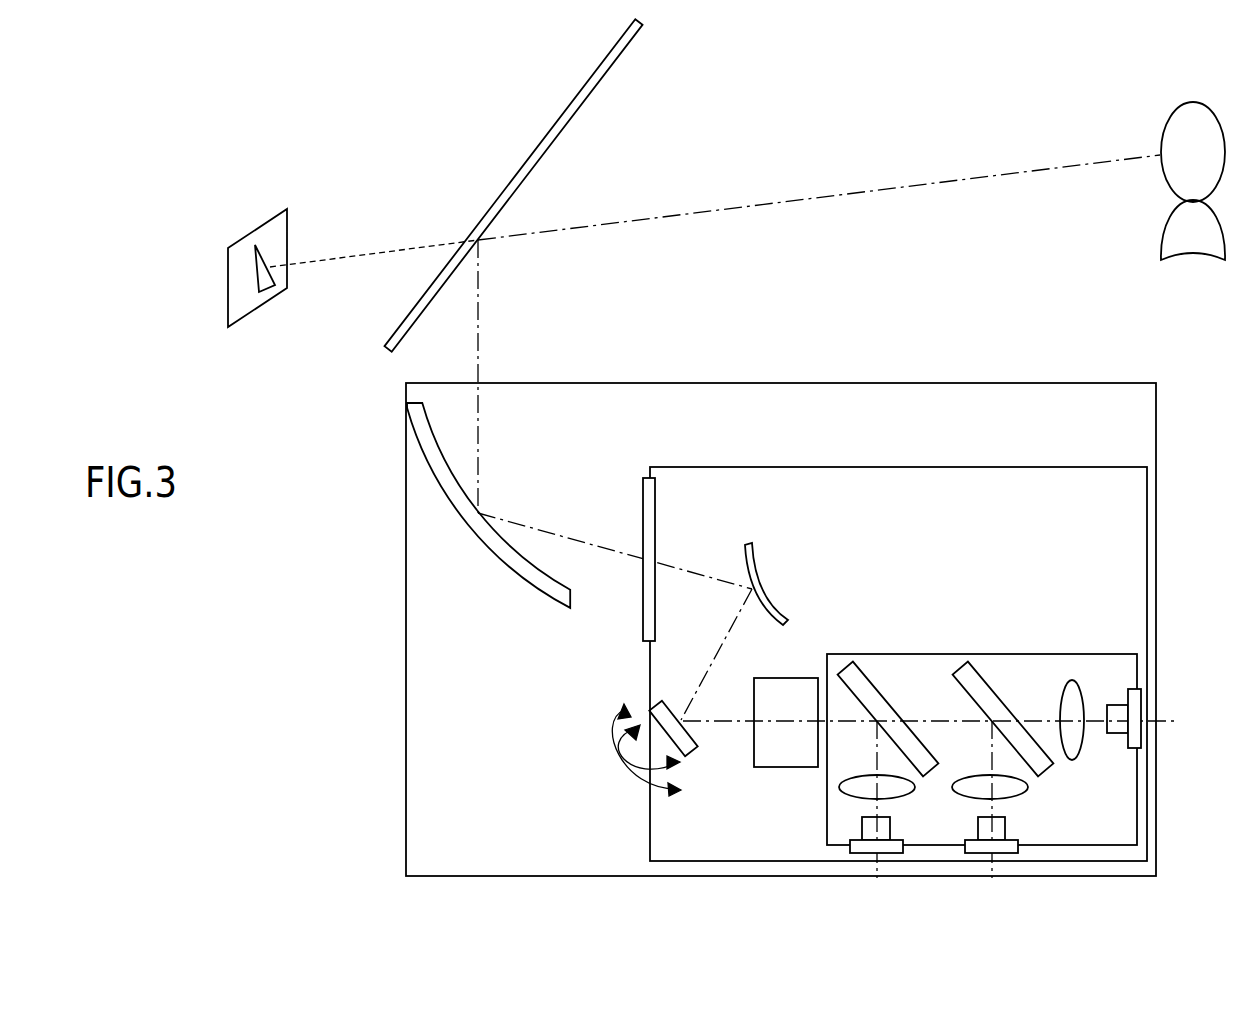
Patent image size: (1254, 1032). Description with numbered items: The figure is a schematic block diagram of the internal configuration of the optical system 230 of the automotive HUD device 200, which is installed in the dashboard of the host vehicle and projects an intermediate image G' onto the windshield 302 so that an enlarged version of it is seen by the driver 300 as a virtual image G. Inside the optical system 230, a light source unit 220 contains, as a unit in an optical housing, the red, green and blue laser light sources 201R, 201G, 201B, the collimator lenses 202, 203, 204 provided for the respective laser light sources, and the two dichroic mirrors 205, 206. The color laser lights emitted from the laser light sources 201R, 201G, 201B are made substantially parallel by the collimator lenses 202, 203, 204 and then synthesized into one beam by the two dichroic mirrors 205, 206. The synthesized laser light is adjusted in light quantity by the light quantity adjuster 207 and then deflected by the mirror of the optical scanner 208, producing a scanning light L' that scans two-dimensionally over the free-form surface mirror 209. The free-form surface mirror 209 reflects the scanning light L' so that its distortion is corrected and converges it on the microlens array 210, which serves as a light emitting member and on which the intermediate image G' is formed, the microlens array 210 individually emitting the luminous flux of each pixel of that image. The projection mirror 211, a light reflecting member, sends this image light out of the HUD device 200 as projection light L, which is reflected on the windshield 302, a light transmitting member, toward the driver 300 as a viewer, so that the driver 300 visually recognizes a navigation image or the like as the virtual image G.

The windshield 302 is at (556, 118).
The driver 300 is at (1193, 101).
The HUD device 200 is at (1181, 491).
The optical system 230 is at (405, 648).
The projection mirror 211 is at (417, 467).
The microlens array 210 is at (643, 494).
The free-form surface mirror 209 is at (758, 565).
The optical scanner 208 is at (690, 756).
The light quantity adjuster 207 is at (788, 678).
The dichroic mirror 206 is at (880, 680).
The dichroic mirror 205 is at (993, 680).
The collimator lens 204 is at (840, 787).
The collimator lens 203 is at (1026, 787).
The collimator lens 202 is at (1072, 682).
The light source unit 220 is at (1113, 652).
The red laser light source 201R is at (1147, 700).
The green laser light source 201G is at (1001, 855).
The blue laser light source 201B is at (868, 855).
The virtual image G is at (353, 249).
The intermediate image G' is at (700, 480).
The projection light L is at (819, 372).
The scanning light L' is at (716, 654).